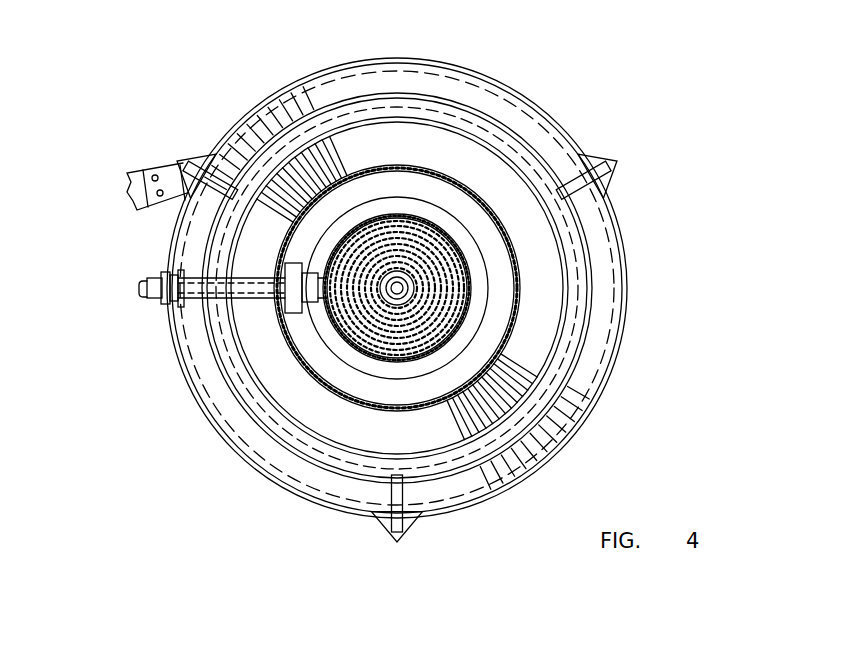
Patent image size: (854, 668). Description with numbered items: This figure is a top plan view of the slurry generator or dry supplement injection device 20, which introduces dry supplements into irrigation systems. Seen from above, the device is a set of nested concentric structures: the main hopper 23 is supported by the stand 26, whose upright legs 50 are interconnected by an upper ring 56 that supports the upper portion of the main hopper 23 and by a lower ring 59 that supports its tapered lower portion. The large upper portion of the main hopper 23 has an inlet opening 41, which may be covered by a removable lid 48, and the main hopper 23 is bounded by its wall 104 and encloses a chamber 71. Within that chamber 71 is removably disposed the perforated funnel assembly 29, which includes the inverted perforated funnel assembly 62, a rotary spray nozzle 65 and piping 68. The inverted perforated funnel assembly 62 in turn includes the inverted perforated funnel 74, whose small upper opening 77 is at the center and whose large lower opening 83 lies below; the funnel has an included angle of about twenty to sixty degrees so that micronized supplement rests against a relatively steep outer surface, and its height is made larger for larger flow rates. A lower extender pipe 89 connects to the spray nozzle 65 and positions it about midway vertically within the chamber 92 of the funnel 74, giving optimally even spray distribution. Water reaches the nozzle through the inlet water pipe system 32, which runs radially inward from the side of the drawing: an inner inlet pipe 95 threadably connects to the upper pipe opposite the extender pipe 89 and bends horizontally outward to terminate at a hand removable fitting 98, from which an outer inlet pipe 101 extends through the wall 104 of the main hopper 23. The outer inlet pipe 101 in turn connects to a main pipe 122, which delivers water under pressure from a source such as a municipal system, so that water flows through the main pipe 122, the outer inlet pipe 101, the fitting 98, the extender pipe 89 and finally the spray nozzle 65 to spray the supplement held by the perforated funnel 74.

The injection device 20 is at (593, 60).
The main hopper 23 is at (467, 75).
The stand 26 is at (603, 147).
The perforated funnel assembly 29 is at (452, 206).
The inlet water pipe system 32 is at (122, 266).
The inlet opening 41 is at (401, 195).
The removable lid 48 is at (468, 272).
The upright legs 50 is at (612, 178).
The upper ring 56 is at (332, 70).
The lower ring 59 is at (592, 272).
The inverted perforated funnel assembly 62 is at (463, 302).
The rotary spray nozzle 65 is at (397, 300).
The piping 68 is at (268, 325).
The chamber 71 is at (358, 378).
The inverted perforated funnel 74 is at (352, 352).
The small upper opening 77 is at (415, 265).
The large lower opening 83 is at (427, 338).
The lower extender pipe 89 is at (380, 272).
The chamber 92 is at (385, 240).
The inner inlet pipe 95 is at (322, 303).
The hand removable fitting 98 is at (290, 266).
The outer inlet pipe 101 is at (166, 304).
The wall 104 is at (620, 308).
The main pipe 122 is at (143, 293).